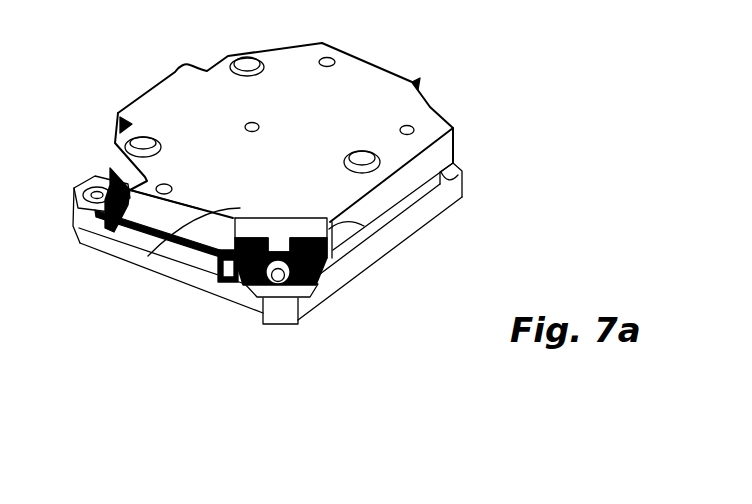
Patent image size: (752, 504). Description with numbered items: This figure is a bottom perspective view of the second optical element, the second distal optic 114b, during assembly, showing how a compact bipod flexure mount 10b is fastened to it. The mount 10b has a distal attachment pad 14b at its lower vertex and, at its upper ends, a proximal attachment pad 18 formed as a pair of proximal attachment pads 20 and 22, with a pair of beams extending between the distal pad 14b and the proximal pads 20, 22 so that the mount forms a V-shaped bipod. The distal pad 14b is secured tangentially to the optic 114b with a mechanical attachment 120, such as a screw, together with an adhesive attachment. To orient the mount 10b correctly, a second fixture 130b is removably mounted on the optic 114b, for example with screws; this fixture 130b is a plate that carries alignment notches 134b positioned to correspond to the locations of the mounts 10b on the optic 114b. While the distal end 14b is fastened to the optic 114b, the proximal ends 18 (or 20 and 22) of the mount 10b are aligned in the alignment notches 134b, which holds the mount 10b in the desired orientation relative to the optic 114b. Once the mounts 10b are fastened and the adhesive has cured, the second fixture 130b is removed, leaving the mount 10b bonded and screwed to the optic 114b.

The bipod flexure mount 10b is at (230, 283).
The distal attachment pad 14b is at (328, 268).
The proximal attachment pad 18 is at (215, 208).
The proximal attachment pad 20 is at (364, 226).
The proximal attachment pad 22 is at (200, 197).
The second distal optic 114b is at (458, 183).
The mechanical attachment 120 is at (278, 279).
The second fixture 130b is at (358, 67).
The alignment notch 134b is at (175, 72).